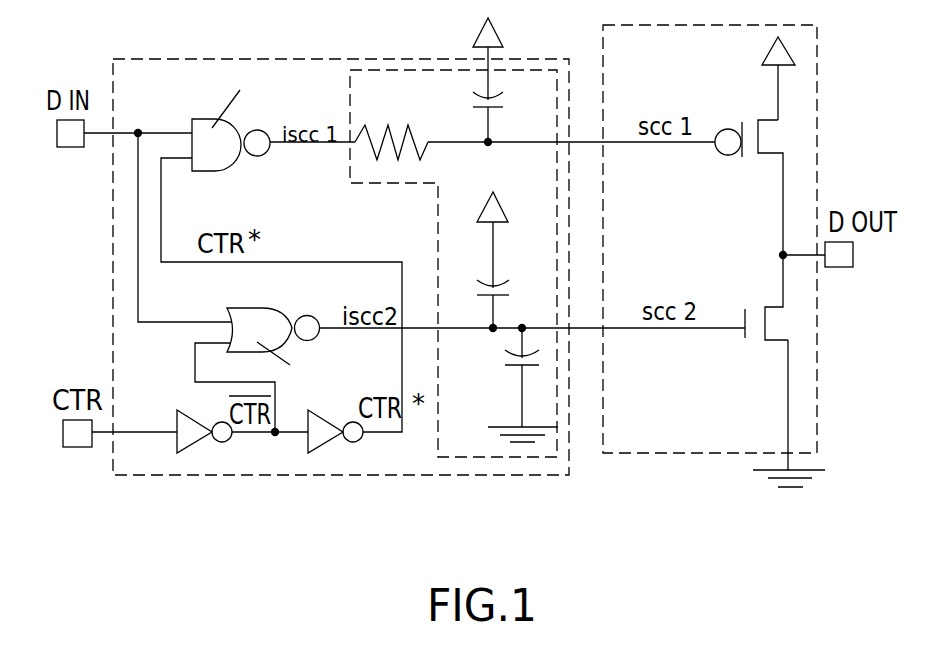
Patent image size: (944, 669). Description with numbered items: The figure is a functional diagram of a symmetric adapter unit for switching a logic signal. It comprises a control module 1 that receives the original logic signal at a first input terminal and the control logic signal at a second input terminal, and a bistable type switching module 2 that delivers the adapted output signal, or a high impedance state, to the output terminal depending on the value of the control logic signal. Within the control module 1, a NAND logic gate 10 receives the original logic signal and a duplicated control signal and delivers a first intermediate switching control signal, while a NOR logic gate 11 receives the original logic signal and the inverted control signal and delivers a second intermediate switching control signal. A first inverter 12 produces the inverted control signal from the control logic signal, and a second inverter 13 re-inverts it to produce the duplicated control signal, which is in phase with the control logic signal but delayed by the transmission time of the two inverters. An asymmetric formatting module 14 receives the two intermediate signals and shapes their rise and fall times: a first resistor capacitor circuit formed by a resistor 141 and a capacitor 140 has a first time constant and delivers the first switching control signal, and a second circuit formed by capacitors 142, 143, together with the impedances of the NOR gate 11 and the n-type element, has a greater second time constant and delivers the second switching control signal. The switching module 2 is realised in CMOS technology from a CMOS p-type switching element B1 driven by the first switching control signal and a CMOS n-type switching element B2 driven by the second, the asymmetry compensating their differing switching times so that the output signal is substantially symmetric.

The control module 1 is at (115, 475).
The bistable type switching module 2 is at (663, 455).
The NAND logic gate 10 is at (215, 172).
The NOR logic gate 11 is at (260, 308).
The first inverter 12 is at (177, 447).
The second inverter 13 is at (307, 445).
The asymmetric formatting module 14 is at (463, 427).
The capacitor 140 is at (505, 122).
The resistor 141 is at (390, 128).
The capacitor 142 is at (503, 282).
The capacitor 143 is at (517, 368).
The CMOS p-type switching element B1 is at (753, 152).
The CMOS n-type switching element B2 is at (757, 340).